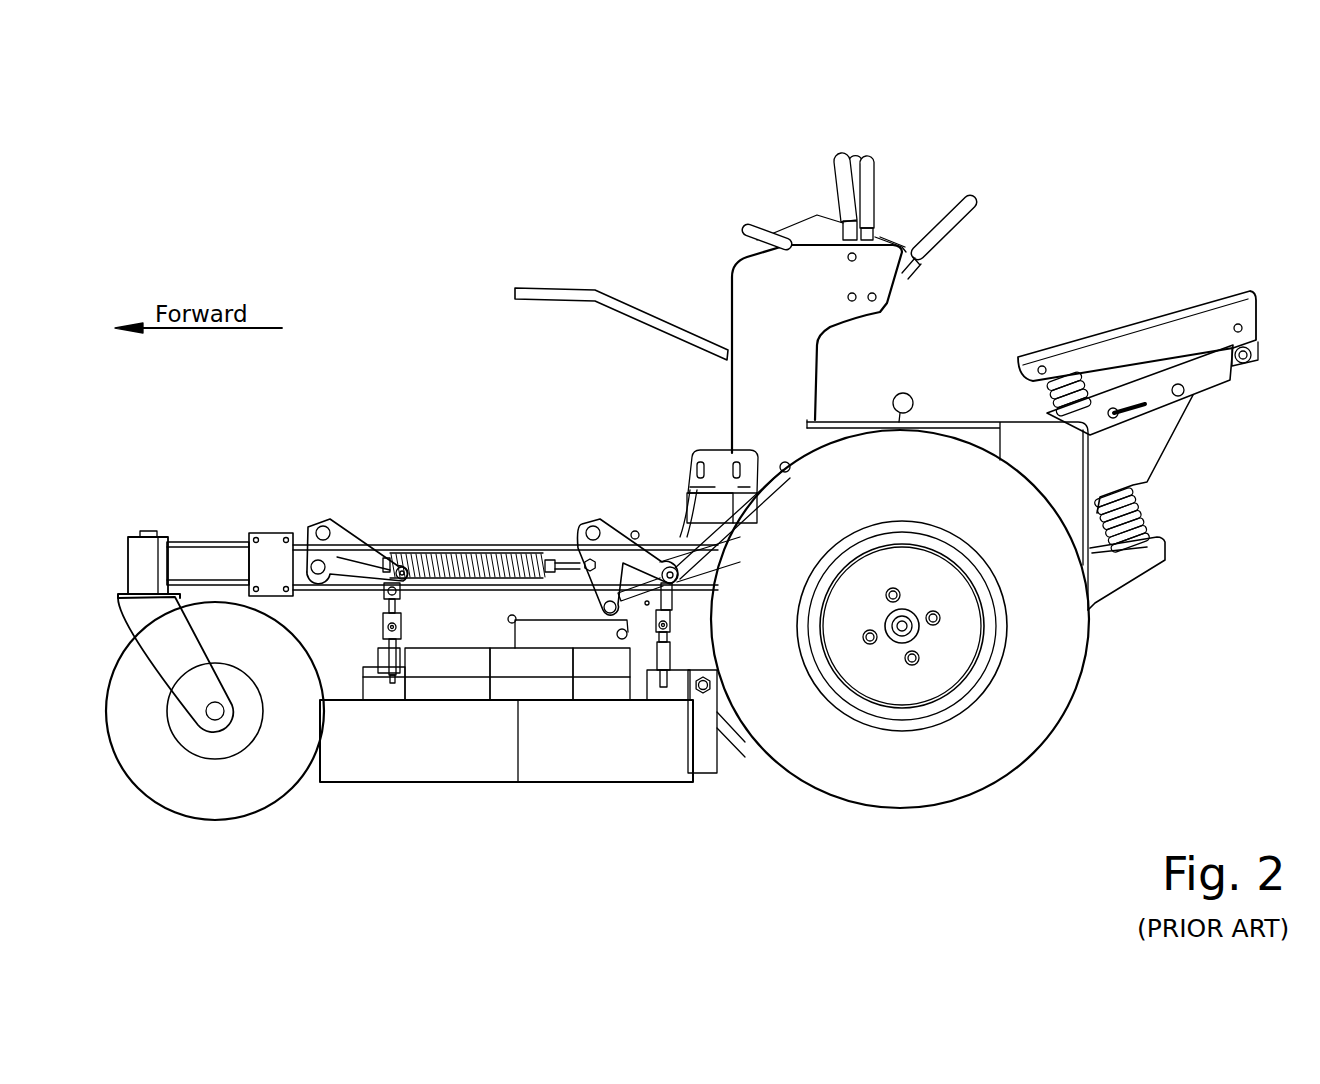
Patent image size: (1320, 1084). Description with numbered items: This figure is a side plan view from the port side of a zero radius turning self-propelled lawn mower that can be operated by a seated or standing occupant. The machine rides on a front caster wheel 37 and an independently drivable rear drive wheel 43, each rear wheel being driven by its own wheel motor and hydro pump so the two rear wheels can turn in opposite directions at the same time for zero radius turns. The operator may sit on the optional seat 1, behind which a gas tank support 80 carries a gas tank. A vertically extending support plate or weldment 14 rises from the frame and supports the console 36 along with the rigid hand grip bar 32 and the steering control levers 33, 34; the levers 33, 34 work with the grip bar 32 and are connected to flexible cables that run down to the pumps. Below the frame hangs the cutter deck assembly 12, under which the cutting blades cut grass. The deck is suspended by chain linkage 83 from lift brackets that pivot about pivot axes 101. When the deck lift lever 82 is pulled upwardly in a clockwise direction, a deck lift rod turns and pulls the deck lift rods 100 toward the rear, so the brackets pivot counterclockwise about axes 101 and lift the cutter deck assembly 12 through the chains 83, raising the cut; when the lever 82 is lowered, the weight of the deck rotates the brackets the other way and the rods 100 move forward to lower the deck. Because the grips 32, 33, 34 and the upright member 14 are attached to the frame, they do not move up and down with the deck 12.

The seat 1 is at (1158, 333).
The cutter deck assembly 12 is at (590, 752).
The vertically extending support plates or weldments 14 is at (740, 385).
The rigid hand grip bar 32 is at (852, 157).
The steering control lever 33 is at (833, 162).
The steering control lever 34 is at (1000, 173).
The console 36 is at (887, 240).
The front caster wheel 37 is at (150, 770).
The rear drive wheel 43 is at (997, 742).
The gas tank support 80 is at (1012, 412).
The deck lift lever 82 is at (558, 293).
The chain linkage 83 is at (400, 603).
The deck lift rod 100 is at (555, 552).
The pivot axis 101 is at (320, 520).